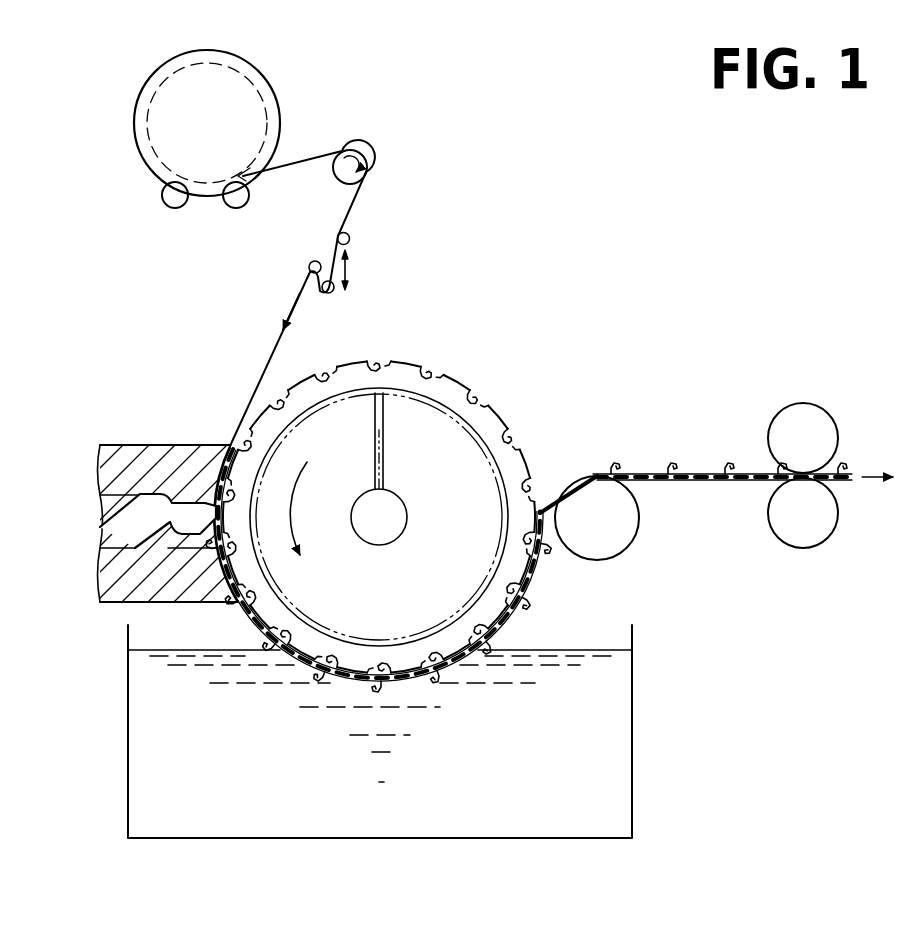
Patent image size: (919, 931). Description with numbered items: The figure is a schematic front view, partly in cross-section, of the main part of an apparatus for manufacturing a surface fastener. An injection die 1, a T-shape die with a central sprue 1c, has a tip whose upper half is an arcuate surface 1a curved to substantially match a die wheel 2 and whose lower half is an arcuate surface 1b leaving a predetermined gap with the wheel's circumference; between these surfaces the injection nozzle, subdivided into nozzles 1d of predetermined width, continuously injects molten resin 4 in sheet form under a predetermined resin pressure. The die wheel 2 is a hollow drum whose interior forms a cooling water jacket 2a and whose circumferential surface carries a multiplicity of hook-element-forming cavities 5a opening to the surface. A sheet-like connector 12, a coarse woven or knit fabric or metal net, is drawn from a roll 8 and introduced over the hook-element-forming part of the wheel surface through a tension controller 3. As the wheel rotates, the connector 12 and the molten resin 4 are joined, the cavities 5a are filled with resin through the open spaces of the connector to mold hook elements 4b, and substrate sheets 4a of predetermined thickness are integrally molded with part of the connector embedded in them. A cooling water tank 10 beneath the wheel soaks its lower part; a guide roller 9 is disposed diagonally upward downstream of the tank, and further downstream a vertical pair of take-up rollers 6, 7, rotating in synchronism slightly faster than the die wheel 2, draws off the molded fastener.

The injection die 1 is at (178, 512).
The upper arcuate surface 1a is at (203, 473).
The lower arcuate surface 1b is at (205, 538).
The central sprue 1c is at (148, 523).
The nozzles 1d is at (232, 520).
The die wheel 2 is at (382, 481).
The cooling water jacket 2a is at (493, 425).
The tension controller 3 is at (360, 258).
The molten resin 4 is at (128, 518).
The substrate sheets 4a is at (697, 482).
The hook elements 4b is at (727, 467).
The hook-element-forming cavities 5a is at (428, 368).
The take-up roller 6 is at (808, 425).
The take-up roller 7 is at (815, 532).
The roll 8 is at (272, 94).
The guide roller 9 is at (620, 545).
The cooling water tank 10 is at (612, 750).
The sheet-like connector 12 is at (372, 186).